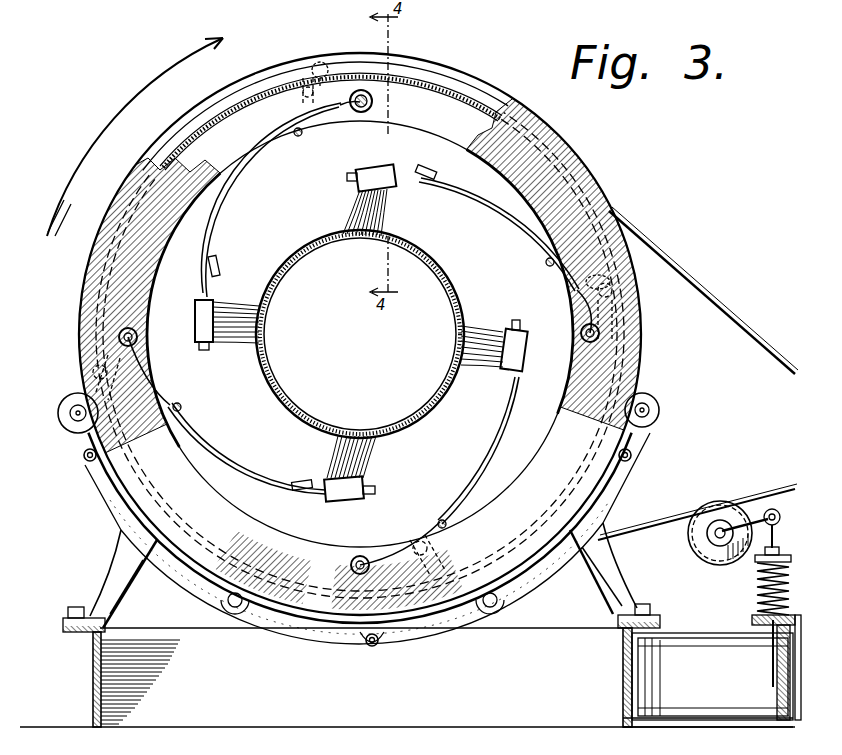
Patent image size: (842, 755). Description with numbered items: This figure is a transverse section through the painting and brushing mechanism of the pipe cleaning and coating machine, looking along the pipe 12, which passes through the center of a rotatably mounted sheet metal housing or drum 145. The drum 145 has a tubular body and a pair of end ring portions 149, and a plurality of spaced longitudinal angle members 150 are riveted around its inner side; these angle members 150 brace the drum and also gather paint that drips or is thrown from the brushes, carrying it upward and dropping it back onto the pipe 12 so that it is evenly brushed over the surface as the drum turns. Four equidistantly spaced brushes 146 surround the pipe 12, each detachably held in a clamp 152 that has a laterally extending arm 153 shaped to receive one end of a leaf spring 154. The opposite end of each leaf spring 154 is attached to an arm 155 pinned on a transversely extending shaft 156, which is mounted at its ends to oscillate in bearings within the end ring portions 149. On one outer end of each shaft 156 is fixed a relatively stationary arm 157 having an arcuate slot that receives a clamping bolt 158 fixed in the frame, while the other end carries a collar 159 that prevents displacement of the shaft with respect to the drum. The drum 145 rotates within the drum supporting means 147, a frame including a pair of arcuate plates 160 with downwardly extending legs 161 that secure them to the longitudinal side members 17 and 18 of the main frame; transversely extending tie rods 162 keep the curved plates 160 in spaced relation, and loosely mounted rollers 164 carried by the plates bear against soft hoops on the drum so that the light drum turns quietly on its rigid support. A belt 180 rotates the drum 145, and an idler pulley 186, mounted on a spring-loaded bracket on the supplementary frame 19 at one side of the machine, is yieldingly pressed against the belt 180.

The pipe 12 is at (302, 251).
The longitudinal side member 17 is at (92, 680).
The longitudinal side member 18 is at (623, 675).
The supplementary frame 19 is at (775, 675).
The housing or drum 145 is at (473, 100).
The brush 146 is at (390, 213).
The drum supporting means 147 is at (642, 484).
The end ring portion 149 is at (372, 550).
The longitudinal angle member 150 is at (413, 73).
The clamp 152 is at (378, 168).
The laterally extending arm 153 is at (428, 165).
The leaf spring 154 is at (230, 208).
The arm 155 is at (299, 136).
The shaft 156 is at (357, 113).
The relatively stationary arm 157 is at (338, 58).
The clamping bolt 158 is at (302, 72).
The collar 159 is at (582, 330).
The arcuate plate 160 is at (308, 645).
The leg 161 is at (108, 575).
The tie rod 162 is at (86, 460).
The roller 164 is at (62, 400).
The belt 180 is at (718, 300).
The idler pulley 186 is at (716, 565).